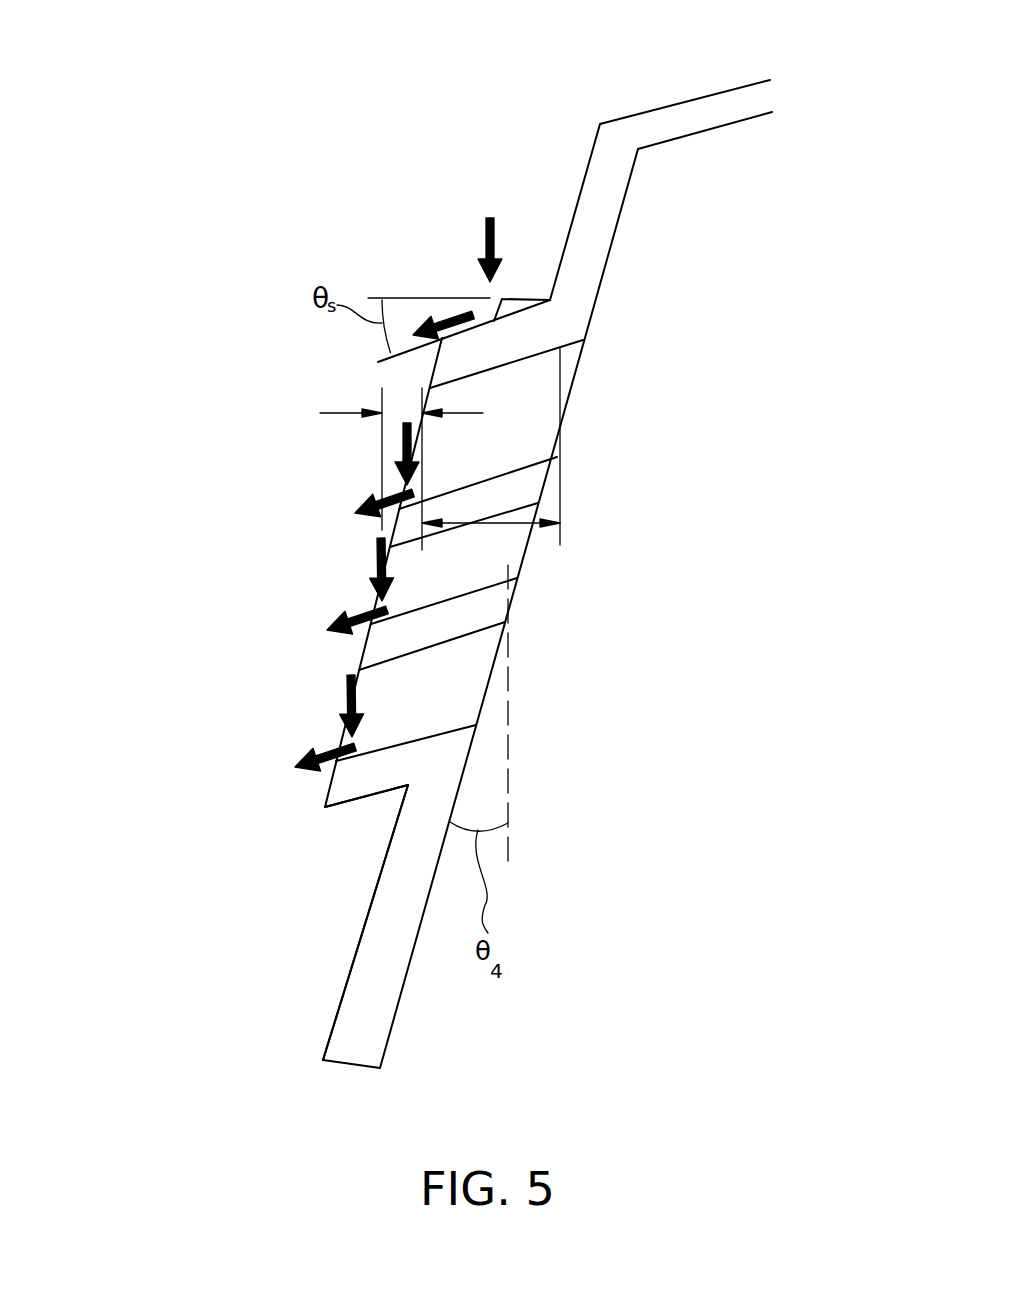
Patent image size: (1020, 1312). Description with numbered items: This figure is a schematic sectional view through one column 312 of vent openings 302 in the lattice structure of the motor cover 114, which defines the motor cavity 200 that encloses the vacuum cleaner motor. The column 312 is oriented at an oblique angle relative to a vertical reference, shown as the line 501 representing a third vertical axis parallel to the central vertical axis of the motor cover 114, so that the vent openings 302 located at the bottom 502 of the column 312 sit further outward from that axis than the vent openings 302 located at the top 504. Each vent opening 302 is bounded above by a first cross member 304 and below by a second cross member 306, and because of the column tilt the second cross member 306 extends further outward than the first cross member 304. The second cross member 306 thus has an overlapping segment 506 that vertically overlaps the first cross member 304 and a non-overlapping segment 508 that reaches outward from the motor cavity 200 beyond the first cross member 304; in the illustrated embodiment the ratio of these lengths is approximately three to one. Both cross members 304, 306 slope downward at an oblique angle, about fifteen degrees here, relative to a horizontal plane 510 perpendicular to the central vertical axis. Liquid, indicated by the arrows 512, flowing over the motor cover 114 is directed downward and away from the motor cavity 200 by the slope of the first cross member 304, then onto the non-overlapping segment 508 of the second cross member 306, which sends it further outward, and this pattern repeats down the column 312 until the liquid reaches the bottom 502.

The motor cover 114 is at (700, 113).
The motor cavity 200 is at (707, 668).
The vent opening 302 is at (520, 415).
The first cross member 304 is at (502, 340).
The second cross member 306 is at (500, 495).
The column 312 is at (325, 578).
The line 501 is at (508, 800).
The bottom 502 is at (275, 817).
The top 504 is at (524, 270).
The overlapping segment 506 is at (507, 525).
The non-overlapping segment 508 is at (398, 408).
The horizontal plane 510 is at (400, 297).
The arrows 512 is at (485, 248).